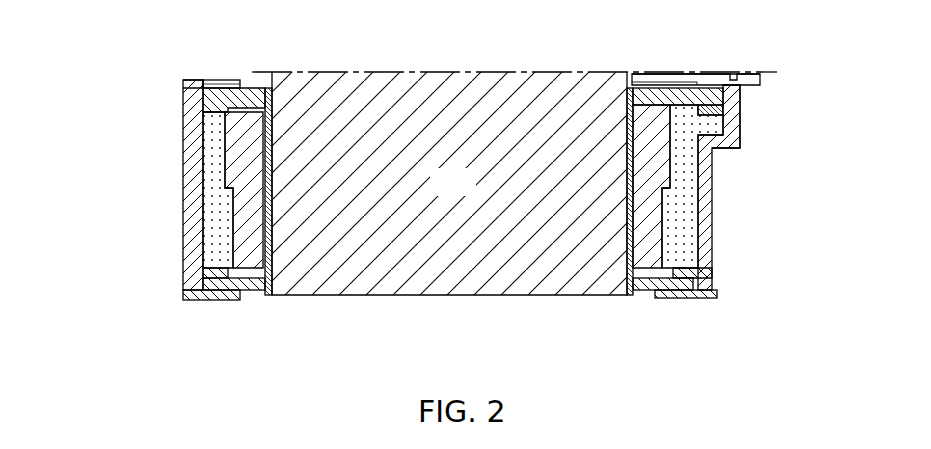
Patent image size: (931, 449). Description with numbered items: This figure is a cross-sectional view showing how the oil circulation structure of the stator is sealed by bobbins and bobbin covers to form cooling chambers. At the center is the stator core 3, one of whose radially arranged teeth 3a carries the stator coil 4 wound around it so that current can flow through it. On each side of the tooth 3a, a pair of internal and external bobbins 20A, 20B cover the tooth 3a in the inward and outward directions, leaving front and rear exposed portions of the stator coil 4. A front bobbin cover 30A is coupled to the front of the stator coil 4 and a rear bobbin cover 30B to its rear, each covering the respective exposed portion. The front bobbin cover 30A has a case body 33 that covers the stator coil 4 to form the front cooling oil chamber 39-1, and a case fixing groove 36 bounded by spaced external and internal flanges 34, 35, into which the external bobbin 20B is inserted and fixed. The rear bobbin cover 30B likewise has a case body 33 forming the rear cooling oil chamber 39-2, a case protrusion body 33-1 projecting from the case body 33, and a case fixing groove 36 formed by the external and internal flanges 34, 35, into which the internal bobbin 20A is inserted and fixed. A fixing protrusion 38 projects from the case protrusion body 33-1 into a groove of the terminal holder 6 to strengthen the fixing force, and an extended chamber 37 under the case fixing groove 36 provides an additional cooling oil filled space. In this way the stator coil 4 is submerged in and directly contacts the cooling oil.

The stator core 3 is at (514, 155).
The teeth 3a is at (449, 183).
The stator coil 4 is at (635, 88).
The terminal holder 6 is at (677, 74).
The internal bobbin 20A is at (243, 290).
The external bobbin 20B is at (238, 82).
The front bobbin cover 30A is at (428, 180).
The rear bobbin cover 30B is at (748, 164).
The case body 33 is at (192, 146).
The case protrusion body 33-1 is at (732, 143).
The external flange 34 is at (186, 80).
The internal flange 35 is at (205, 108).
The case fixing groove 36 is at (185, 292).
The extended chamber 37 is at (722, 108).
The fixing protrusion 38 is at (712, 85).
The front cooling oil chamber 39-1 is at (208, 205).
The rear cooling oil chamber 39-2 is at (695, 183).